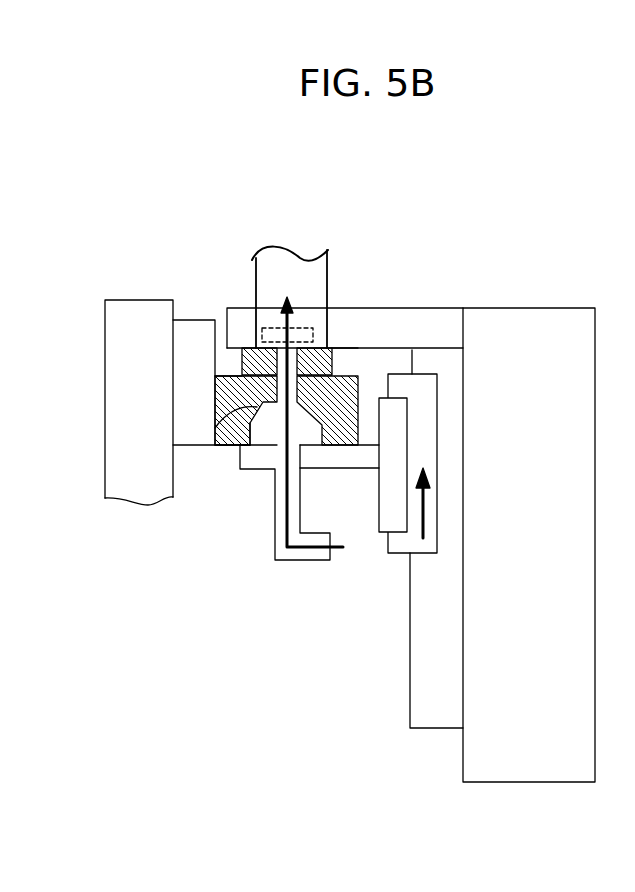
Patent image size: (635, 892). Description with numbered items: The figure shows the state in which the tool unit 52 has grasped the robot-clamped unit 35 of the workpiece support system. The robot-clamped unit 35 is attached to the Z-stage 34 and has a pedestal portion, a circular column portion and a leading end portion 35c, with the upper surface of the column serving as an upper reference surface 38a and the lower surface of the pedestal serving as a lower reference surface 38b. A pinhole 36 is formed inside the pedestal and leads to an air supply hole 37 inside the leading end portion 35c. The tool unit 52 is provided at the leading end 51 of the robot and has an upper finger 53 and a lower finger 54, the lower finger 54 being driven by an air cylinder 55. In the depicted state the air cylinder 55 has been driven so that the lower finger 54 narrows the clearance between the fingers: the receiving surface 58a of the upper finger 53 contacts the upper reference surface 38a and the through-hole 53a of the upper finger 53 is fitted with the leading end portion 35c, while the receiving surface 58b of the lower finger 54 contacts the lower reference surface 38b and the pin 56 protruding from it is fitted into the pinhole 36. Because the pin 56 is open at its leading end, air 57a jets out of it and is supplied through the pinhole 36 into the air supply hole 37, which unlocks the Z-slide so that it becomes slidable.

The Z-stage 34 is at (110, 393).
The robot-clamped unit 35 is at (358, 398).
The leading end portion 35c is at (263, 346).
The pinhole 36 is at (215, 428).
The air supply hole 37 is at (298, 335).
The upper reference surface 38a is at (330, 348).
The lower reference surface 38b is at (237, 446).
The leading end 51 is at (555, 315).
The tool unit 52 is at (441, 206).
The upper finger 53 is at (443, 313).
The through-hole 53a is at (266, 311).
The lower finger 54 is at (355, 460).
The air cylinder 55 is at (398, 518).
The pin 56 is at (266, 425).
The air 57a is at (334, 429).
The receiving surface 58a is at (353, 350).
The receiving surface 58b is at (232, 452).